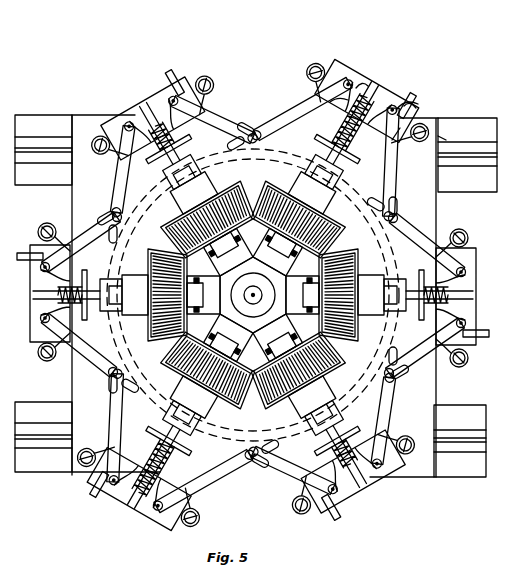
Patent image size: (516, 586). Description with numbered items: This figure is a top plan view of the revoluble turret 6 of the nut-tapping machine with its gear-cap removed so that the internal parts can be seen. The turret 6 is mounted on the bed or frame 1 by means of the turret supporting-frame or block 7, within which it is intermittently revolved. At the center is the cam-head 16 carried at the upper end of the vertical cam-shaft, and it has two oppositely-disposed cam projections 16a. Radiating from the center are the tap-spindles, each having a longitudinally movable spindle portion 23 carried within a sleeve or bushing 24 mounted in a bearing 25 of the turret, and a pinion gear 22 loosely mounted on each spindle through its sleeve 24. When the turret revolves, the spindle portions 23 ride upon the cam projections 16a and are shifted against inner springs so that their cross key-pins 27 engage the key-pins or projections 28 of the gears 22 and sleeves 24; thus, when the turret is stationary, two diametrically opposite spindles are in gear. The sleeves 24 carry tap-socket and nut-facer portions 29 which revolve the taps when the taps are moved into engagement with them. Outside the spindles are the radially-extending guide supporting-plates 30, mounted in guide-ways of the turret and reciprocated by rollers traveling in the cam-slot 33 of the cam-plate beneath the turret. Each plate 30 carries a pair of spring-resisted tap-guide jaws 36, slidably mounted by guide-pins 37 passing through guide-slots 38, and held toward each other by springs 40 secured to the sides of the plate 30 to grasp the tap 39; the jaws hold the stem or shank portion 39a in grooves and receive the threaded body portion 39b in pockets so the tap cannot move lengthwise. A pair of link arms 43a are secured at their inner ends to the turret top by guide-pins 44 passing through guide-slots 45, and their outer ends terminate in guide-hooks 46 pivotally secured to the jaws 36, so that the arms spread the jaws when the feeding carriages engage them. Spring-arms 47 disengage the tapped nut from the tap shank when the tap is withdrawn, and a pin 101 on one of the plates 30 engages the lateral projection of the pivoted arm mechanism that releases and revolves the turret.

The bed or frame 1 is at (30, 124).
The revoluble turret 6 is at (97, 233).
The turret supporting-frame or block 7 is at (80, 382).
The cam-head 16 is at (320, 315).
The cam projections 16a is at (166, 248).
The pinion gears 22 is at (243, 402).
The longitudinally movable spindle portions 23 is at (277, 280).
The sleeves or bushings 24 is at (250, 255).
The bearings 25 is at (222, 232).
The cross key-pins 27 is at (241, 263).
The key-pins or projections 28 is at (262, 220).
The tap-socket and nut-facer portions 29 is at (326, 190).
The guide supporting-plates 30 is at (336, 80).
The cam-slot 33 is at (426, 240).
The tap-guide jaws 36 is at (418, 118).
The guide-pins 37 is at (310, 124).
The guide-slots 38 is at (393, 138).
The tap 39 is at (446, 140).
The stem or shank portion 39a is at (388, 105).
The threaded body portion 39b is at (338, 98).
The springs 40 is at (320, 64).
The link arms 43a is at (400, 190).
The guide-pins 44 is at (253, 134).
The guide-slots 45 is at (462, 364).
The guide-hooks 46 is at (365, 84).
The spring-arm 47 is at (322, 158).
The pin 101 is at (484, 342).